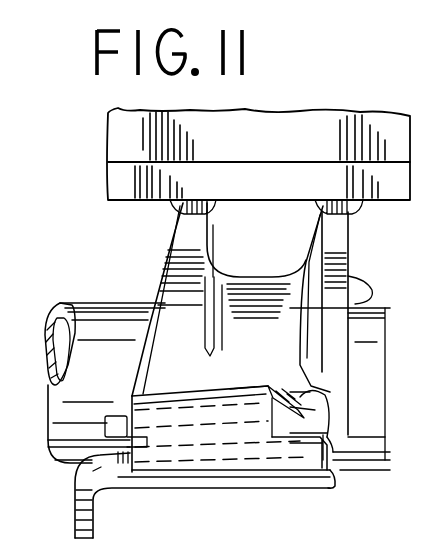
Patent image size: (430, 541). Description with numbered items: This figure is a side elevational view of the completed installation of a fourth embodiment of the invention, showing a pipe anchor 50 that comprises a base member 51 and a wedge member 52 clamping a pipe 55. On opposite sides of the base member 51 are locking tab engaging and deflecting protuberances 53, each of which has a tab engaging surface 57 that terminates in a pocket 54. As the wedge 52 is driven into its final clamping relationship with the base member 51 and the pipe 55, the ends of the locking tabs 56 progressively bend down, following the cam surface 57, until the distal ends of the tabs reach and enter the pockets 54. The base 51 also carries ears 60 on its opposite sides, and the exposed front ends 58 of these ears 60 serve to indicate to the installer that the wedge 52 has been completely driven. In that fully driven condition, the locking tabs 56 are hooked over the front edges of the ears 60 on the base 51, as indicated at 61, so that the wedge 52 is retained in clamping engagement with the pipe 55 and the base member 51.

The pipe anchor 50 is at (91, 219).
The base member 51 is at (353, 251).
The wedge member 52 is at (164, 396).
The locking tab engaging and deflecting protuberances 53 is at (327, 433).
The pockets 54 is at (348, 431).
The pipe 55 is at (77, 302).
The locking tabs 56 is at (288, 388).
The tab engaging surfaces 57 is at (310, 395).
The exposed front ends 58 is at (117, 403).
The ears 60 is at (243, 378).
The hooked engagement of locking tabs over ears 61 is at (263, 420).